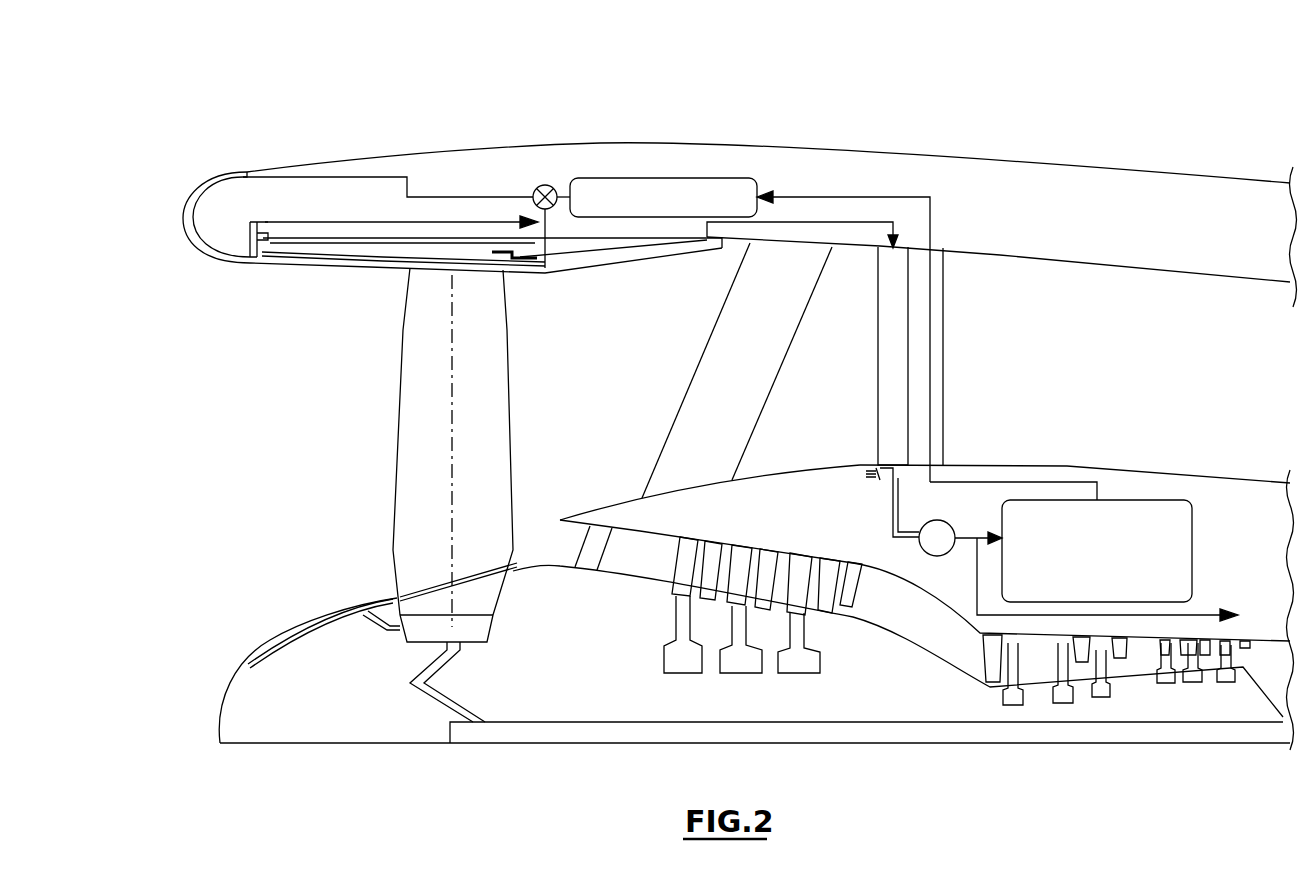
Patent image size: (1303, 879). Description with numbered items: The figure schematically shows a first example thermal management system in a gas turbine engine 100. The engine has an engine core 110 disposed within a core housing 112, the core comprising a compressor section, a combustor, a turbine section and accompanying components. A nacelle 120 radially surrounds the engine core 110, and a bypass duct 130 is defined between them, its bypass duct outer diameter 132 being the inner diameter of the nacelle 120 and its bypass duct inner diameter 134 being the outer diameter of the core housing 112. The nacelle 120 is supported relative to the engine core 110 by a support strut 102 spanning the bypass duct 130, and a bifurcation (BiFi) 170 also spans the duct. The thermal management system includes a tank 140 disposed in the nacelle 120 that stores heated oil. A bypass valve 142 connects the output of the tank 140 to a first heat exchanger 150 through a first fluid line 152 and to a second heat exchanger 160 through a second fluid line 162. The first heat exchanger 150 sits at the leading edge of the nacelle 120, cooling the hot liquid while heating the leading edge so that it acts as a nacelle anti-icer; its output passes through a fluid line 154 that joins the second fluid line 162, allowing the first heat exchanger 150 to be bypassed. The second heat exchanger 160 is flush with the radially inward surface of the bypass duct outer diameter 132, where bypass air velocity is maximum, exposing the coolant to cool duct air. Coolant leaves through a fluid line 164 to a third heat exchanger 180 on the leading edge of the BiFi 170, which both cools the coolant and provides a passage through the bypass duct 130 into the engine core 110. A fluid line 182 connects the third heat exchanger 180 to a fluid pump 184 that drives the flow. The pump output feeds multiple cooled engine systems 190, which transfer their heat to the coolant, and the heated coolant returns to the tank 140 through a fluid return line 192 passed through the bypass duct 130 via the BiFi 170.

The gas turbine engine 100 is at (150, 375).
The support strut 102 is at (676, 447).
The engine core 110 is at (597, 705).
The core housing 112 is at (788, 477).
The nacelle 120 is at (826, 162).
The bypass duct 130 is at (1048, 287).
The bypass duct outer diameter 132 is at (1157, 270).
The bypass duct inner diameter 134 is at (1137, 467).
The tank 140 is at (670, 178).
The bypass valve 142 is at (542, 184).
The first heat exchanger 150 is at (197, 196).
The first fluid line 152 is at (370, 177).
The fluid line 154 is at (310, 224).
The second heat exchanger 160 is at (537, 272).
The second fluid line 162 is at (547, 230).
The fluid line 164 is at (868, 226).
The bifurcation (BiFi) 170 is at (947, 307).
The third heat exchanger 180 is at (885, 362).
The fluid line 182 is at (893, 508).
The fluid pump 184 is at (936, 557).
The cooled engine systems 190 is at (1193, 542).
The fluid return line 192 is at (983, 481).